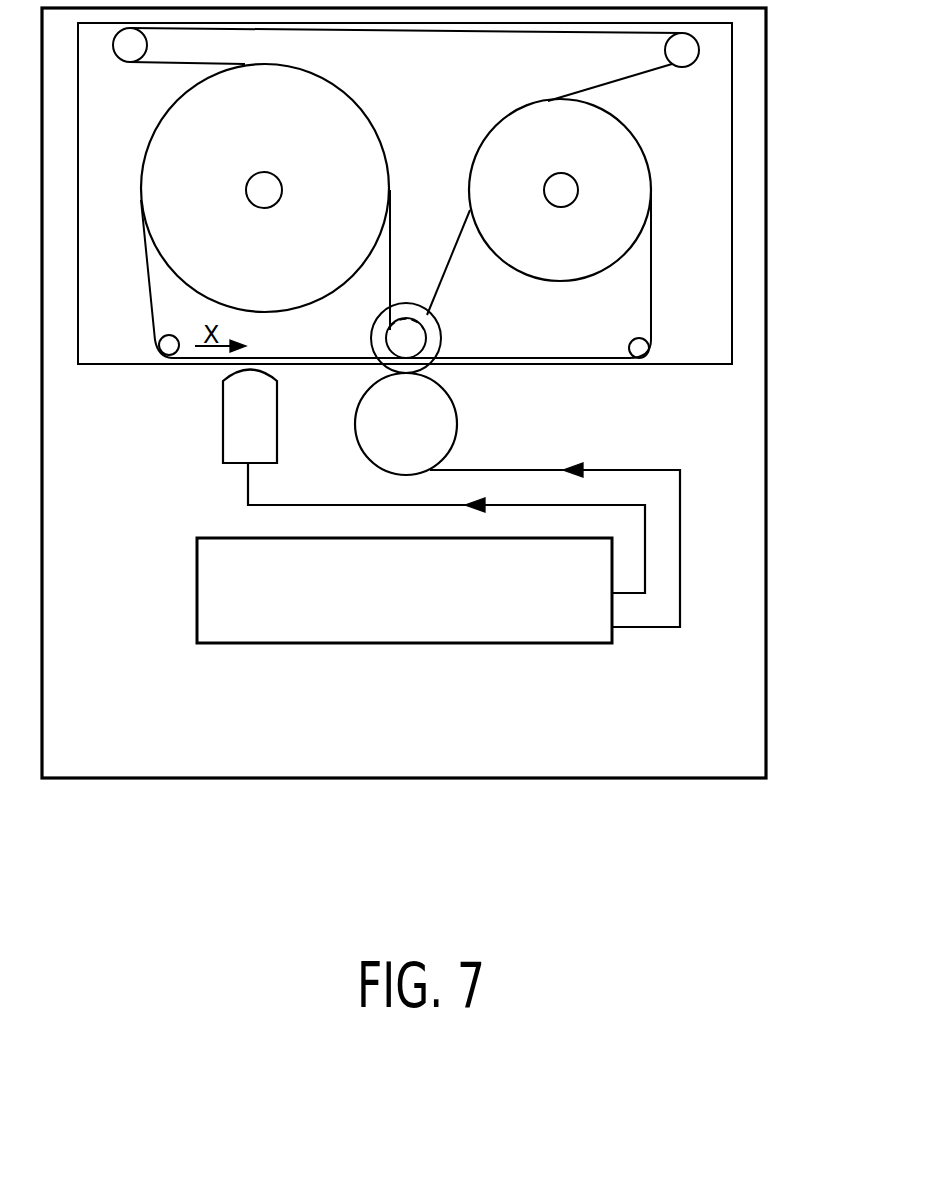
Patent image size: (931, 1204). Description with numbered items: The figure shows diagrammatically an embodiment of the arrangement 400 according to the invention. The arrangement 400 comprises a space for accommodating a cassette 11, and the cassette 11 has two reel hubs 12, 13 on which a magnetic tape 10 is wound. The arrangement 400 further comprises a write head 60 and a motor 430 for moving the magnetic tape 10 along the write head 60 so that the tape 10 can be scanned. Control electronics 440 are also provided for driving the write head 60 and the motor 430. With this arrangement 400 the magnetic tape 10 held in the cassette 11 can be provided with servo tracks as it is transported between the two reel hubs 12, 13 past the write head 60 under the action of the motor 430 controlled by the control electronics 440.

The magnetic tape 10 is at (152, 319).
The cassette 11 is at (732, 171).
The reel hub 12 is at (263, 172).
The reel hub 13 is at (563, 173).
The write head 60 is at (223, 417).
The arrangement 400 is at (766, 472).
The motor 430 is at (457, 425).
The control electronics 440 is at (432, 606).